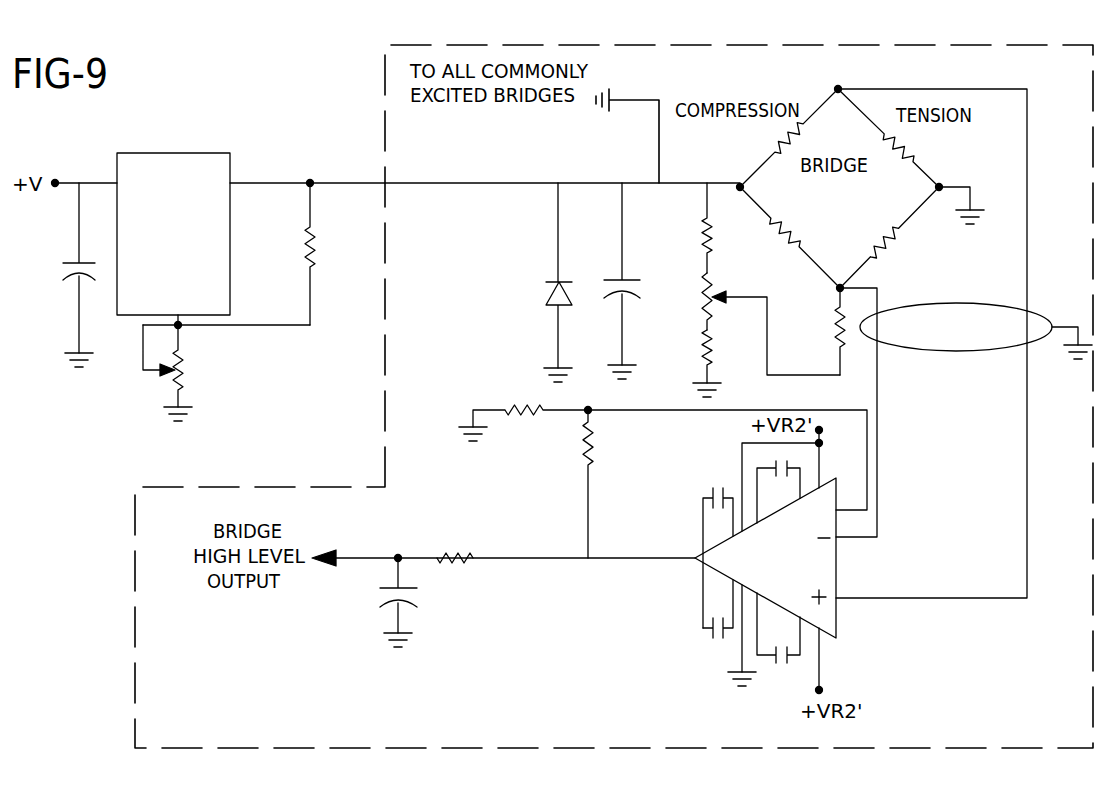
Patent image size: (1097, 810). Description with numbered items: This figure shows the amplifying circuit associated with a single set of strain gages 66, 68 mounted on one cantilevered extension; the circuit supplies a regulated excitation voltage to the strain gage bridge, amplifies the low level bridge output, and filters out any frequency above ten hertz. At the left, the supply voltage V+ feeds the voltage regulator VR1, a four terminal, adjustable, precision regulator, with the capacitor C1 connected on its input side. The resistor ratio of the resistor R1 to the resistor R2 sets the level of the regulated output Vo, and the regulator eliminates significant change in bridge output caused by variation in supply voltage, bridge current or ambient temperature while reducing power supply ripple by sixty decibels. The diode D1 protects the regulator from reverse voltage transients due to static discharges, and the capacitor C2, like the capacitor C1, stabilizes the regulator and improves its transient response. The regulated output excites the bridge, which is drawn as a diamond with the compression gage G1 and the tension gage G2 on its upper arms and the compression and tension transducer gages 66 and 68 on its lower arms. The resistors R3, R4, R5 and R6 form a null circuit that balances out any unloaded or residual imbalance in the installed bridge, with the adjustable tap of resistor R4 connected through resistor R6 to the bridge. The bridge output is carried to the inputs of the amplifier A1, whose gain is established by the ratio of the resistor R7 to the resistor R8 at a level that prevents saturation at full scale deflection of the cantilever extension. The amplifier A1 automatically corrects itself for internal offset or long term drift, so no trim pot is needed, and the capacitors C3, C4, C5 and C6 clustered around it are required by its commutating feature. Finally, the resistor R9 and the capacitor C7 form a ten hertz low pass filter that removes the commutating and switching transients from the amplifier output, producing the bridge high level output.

The voltage regulator VR1 is at (173, 234).
The capacitor C1 is at (62, 275).
The resistor R1 is at (328, 254).
The resistor R2 is at (180, 373).
The diode D1 is at (538, 282).
The capacitor C2 is at (638, 281).
The resistor R3 is at (722, 228).
The resistor R4 is at (753, 324).
The resistor R5 is at (722, 363).
The resistor R6 is at (824, 331).
The compression strain gauge G1 is at (789, 138).
The tension strain gauge G2 is at (888, 138).
The strain gage 66 is at (792, 237).
The strain gage 68 is at (911, 237).
The resistor R7 is at (607, 484).
The resistor R8 is at (663, 457).
The resistor R9 is at (455, 546).
The capacitor C7 is at (417, 602).
The amplifier A1 is at (765, 558).
The capacitor C3 is at (778, 492).
The capacitor C4 is at (718, 544).
The capacitor C5 is at (716, 620).
The capacitor C6 is at (778, 628).